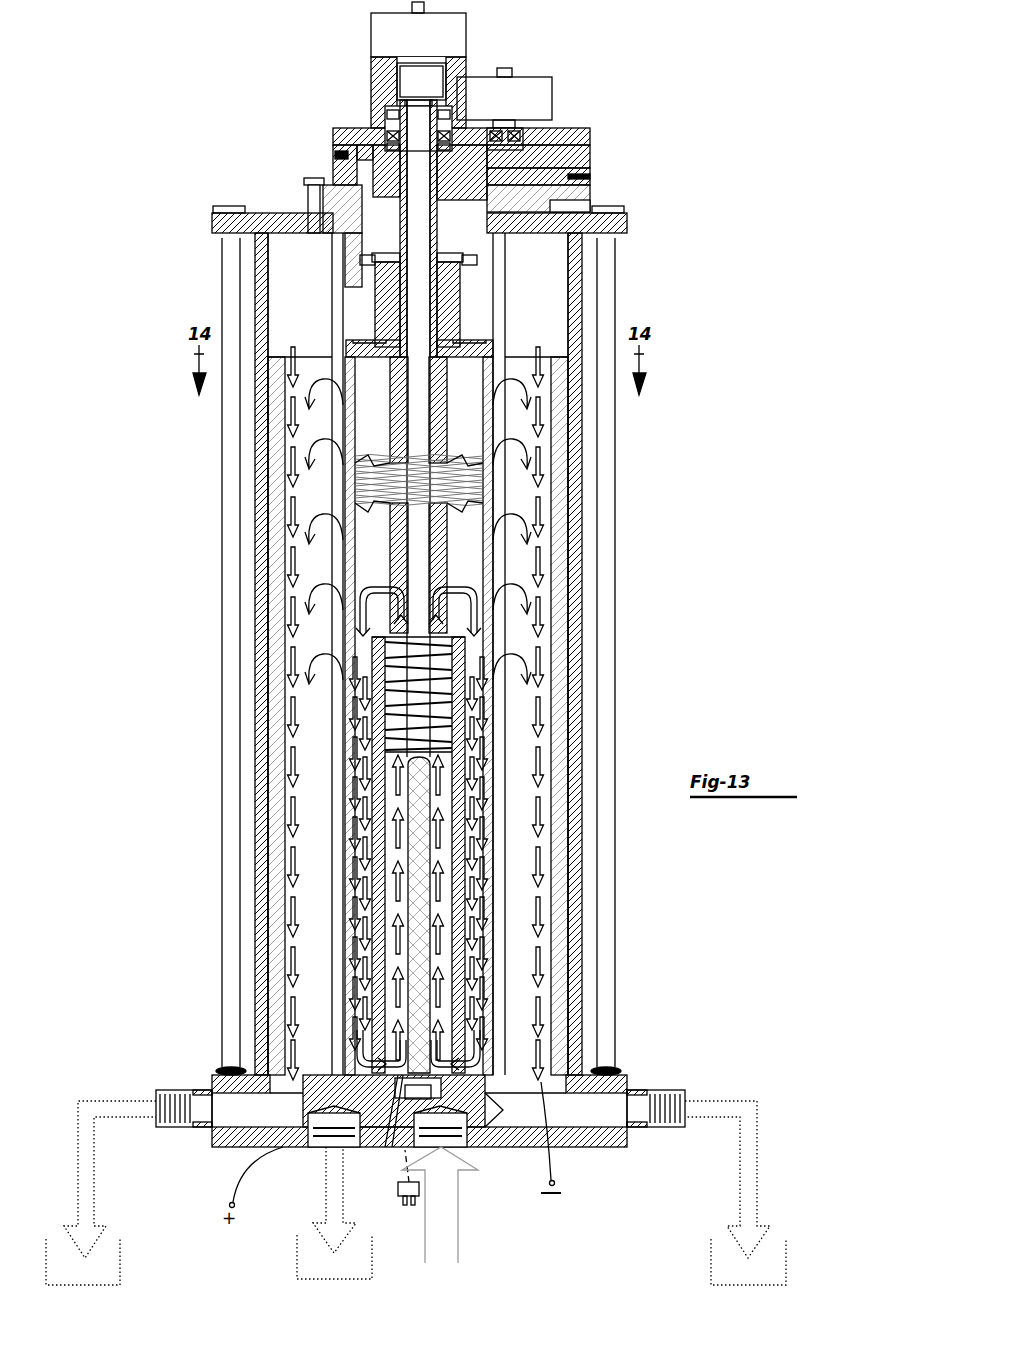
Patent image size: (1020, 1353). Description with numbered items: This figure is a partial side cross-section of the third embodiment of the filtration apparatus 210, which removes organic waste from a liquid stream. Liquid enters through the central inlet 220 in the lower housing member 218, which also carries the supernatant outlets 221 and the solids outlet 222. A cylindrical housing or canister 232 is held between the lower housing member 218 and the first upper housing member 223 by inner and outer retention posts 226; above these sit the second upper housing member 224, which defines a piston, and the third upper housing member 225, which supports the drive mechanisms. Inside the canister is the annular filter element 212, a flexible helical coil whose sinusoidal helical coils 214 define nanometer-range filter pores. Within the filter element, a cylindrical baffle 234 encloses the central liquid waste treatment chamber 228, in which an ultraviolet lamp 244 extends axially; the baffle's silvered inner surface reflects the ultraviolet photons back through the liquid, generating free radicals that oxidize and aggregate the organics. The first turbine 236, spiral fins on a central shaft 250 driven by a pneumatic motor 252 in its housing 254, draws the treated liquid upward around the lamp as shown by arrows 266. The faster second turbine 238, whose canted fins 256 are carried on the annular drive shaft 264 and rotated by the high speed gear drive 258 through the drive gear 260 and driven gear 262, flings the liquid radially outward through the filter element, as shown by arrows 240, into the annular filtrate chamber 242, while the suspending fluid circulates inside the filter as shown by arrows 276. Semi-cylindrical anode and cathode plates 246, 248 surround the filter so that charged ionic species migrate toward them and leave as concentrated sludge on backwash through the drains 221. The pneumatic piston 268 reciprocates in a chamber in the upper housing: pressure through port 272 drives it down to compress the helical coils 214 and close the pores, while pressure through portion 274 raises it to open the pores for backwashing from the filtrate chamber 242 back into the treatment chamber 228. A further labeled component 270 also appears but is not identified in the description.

The filtration apparatus 210 is at (198, 168).
The annular filter element 212 is at (381, 512).
The helical coils 214 is at (470, 495).
The lower housing member 218 is at (593, 1150).
The central inlet 220 is at (430, 1147).
The supernatant outlets 221 is at (160, 1100).
The solids outlet 222 is at (325, 1145).
The first upper housing member 223 is at (283, 215).
The second upper housing member 224 is at (590, 190).
The third upper housing member 225 is at (590, 150).
The retention posts 226 is at (340, 855).
The liquid waste treatment chamber 228 is at (450, 915).
The cylindrical housing 232 is at (582, 605).
The cylindrical baffle 234 is at (468, 800).
The first turbine 236 is at (455, 697).
The second turbine 238 is at (462, 538).
The arrows 240 is at (525, 425).
The annular filtrate chamber 242 is at (312, 680).
The ultraviolet lamp 244 is at (432, 965).
The anode plate 246 is at (283, 985).
The cathode plate 248 is at (565, 1000).
The central shaft 250 is at (432, 305).
The pneumatic motor 252 is at (434, 93).
The housing 254 is at (433, 44).
The canted fins 256 is at (372, 430).
The high speed gear drive 258 is at (518, 108).
The drive gear 260 is at (548, 128).
The driven gear 262 is at (392, 128).
The annular drive shaft 264 is at (358, 243).
The arrows 266 is at (440, 862).
The pneumatic piston 268 is at (375, 325).
The upper housing 270 is at (470, 250).
The port 272 is at (326, 152).
The portion 274 is at (590, 172).
The arrows 276 is at (365, 762).